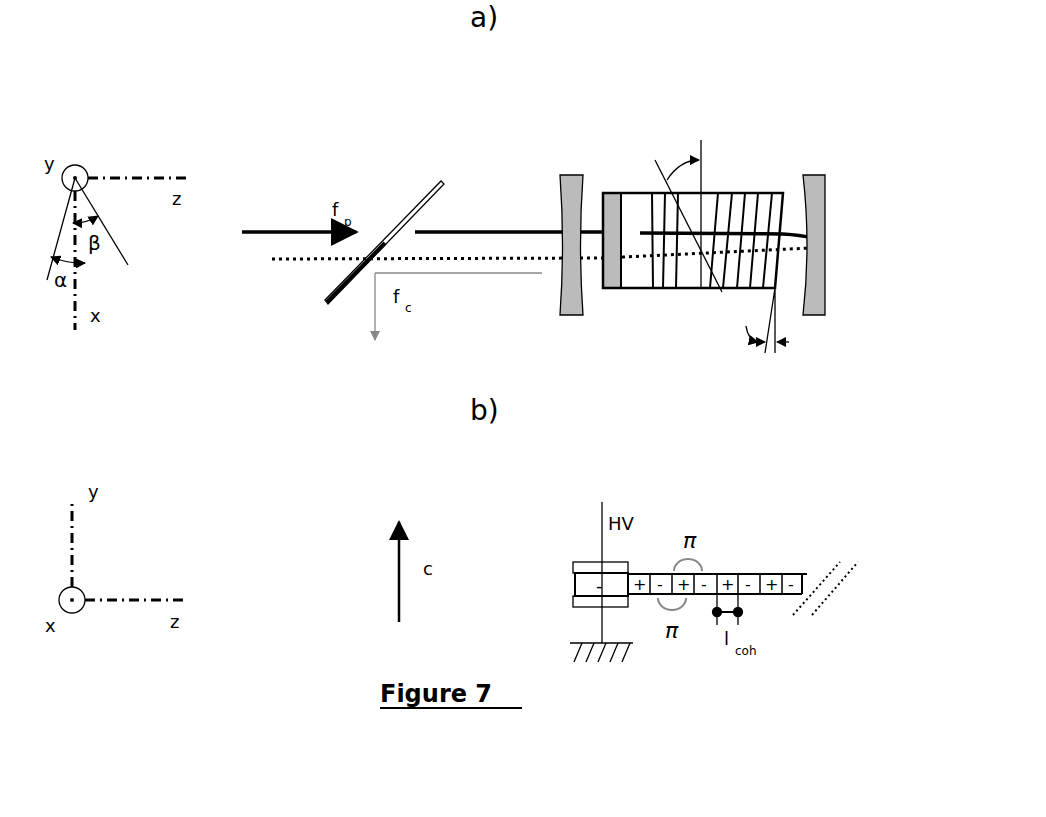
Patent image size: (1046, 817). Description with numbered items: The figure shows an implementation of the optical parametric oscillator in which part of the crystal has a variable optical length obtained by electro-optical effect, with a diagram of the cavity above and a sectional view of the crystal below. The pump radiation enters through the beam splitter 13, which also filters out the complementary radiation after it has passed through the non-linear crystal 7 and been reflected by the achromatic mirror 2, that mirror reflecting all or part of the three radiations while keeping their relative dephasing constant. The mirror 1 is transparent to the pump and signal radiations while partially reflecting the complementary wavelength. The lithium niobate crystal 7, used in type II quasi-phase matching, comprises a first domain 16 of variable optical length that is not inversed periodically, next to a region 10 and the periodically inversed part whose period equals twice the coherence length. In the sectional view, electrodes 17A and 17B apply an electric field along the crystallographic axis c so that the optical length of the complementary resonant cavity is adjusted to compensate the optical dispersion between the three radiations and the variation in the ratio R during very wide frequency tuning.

The mirror 1 is at (567, 175).
The achromatic mirror 2 is at (803, 176).
The non-linear crystal 7 is at (696, 180).
The crystal input section 10 is at (607, 192).
The beam splitter 13 is at (418, 198).
The first domain 16 is at (636, 192).
The electrode 17A is at (572, 562).
The electrode 17B is at (572, 602).